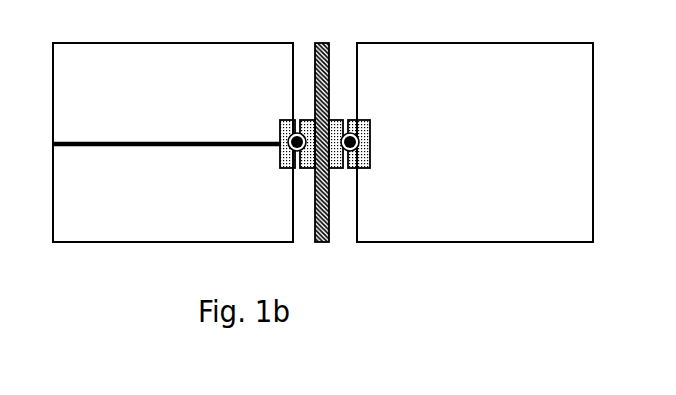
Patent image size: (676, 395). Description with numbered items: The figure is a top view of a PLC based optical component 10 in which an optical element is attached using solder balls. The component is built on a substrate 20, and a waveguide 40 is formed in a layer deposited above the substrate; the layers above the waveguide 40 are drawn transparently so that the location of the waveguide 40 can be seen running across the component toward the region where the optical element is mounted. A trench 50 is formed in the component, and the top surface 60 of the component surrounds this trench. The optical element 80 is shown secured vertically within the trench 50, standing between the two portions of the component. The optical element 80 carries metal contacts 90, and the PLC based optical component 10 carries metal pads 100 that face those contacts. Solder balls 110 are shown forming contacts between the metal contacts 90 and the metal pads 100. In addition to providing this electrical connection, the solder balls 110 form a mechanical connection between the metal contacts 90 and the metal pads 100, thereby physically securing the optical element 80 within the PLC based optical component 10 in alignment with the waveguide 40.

The PLC based optical component 10 is at (147, 36).
The substrate 20 is at (593, 153).
The waveguide 40 is at (158, 146).
The trench 50 is at (304, 234).
The top surface 60 is at (145, 231).
The optical element 80 is at (320, 243).
The metal contacts 90 is at (310, 119).
The metal pads 100 is at (280, 134).
The solder balls 110 is at (298, 120).